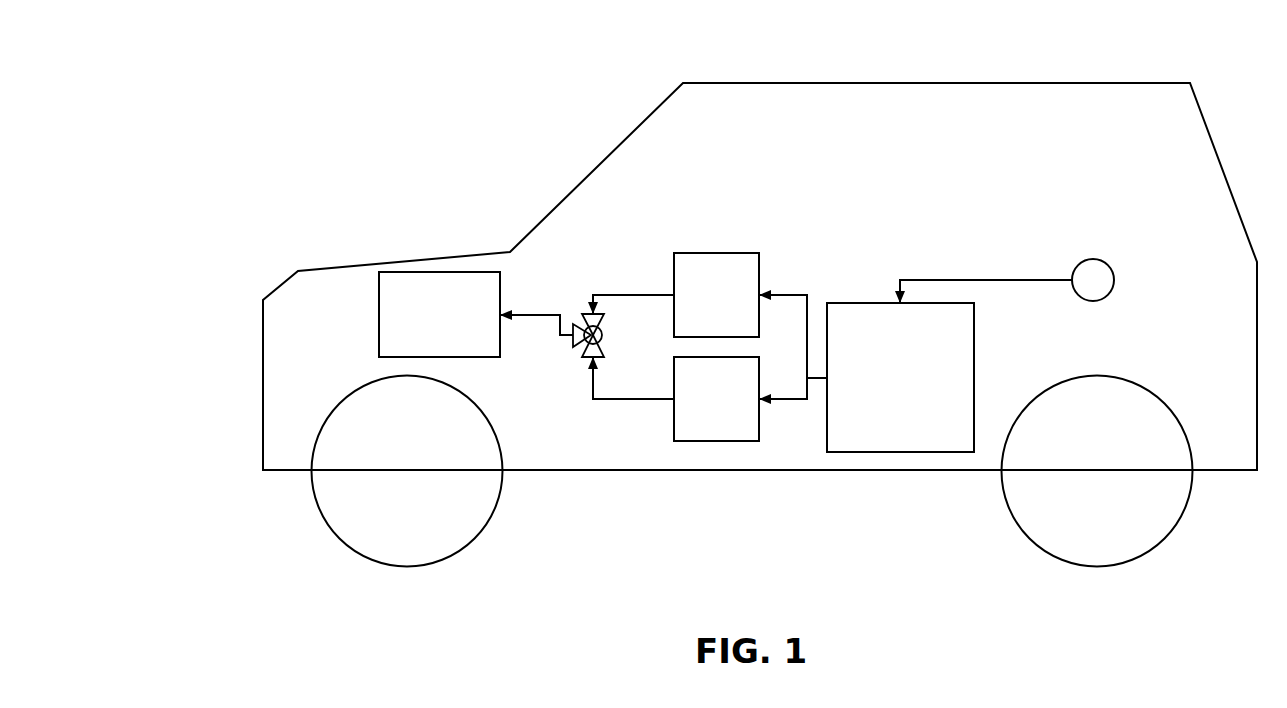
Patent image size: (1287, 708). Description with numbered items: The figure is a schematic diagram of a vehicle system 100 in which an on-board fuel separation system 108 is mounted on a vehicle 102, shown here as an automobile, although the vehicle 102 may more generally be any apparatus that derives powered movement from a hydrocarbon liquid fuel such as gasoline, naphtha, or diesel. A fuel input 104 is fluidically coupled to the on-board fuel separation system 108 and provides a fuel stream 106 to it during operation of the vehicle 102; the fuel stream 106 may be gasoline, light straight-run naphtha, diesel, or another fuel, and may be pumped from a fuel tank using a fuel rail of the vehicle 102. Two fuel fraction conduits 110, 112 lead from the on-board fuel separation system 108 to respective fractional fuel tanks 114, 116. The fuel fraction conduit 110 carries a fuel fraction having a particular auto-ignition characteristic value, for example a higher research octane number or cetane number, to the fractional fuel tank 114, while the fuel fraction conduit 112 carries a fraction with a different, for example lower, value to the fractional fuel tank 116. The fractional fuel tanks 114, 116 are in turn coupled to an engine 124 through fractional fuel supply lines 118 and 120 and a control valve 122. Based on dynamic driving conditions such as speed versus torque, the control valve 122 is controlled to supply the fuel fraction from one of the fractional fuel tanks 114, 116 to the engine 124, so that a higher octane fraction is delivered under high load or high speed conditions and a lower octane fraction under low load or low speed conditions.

The vehicle system 100 is at (500, 60).
The vehicle 102 is at (1077, 83).
The fuel input 104 is at (1114, 282).
The fuel stream 106 is at (1000, 279).
The on-board fuel separation system 108 is at (975, 368).
The fuel fraction conduit 110 is at (800, 294).
The fuel fraction conduit 112 is at (787, 405).
The fractional fuel tank 114 is at (722, 252).
The fractional fuel tank 116 is at (716, 442).
The fractional fuel supply line 118 is at (634, 294).
The fractional fuel supply line 120 is at (618, 400).
The control valve 122 is at (583, 346).
The engine 124 is at (500, 358).